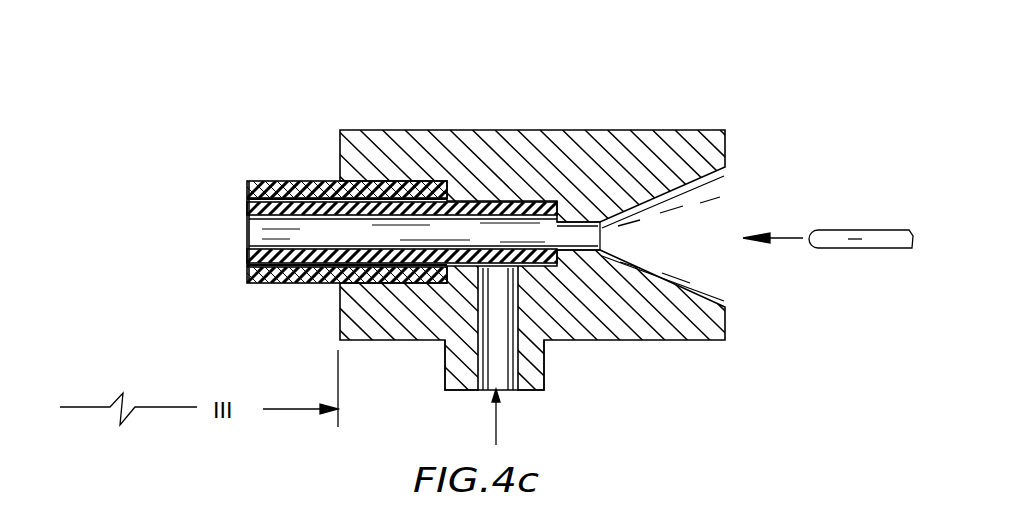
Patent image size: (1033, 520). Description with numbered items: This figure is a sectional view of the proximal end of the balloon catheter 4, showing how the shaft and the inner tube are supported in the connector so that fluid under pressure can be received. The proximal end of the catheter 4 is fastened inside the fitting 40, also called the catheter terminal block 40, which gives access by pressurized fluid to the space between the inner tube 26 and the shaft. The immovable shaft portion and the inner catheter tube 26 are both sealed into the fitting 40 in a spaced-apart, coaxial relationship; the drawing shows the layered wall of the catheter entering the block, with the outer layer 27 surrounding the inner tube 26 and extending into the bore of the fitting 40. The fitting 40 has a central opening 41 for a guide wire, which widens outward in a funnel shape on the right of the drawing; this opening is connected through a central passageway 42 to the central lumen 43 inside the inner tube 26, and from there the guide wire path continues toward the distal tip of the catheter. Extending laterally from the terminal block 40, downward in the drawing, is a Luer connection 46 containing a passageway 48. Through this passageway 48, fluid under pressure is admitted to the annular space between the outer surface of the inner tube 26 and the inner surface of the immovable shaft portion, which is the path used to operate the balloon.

The catheter 4 is at (291, 181).
The inner tube 26 is at (247, 208).
The outer jacket 27 is at (247, 196).
The fitting 40 is at (625, 130).
The central opening 41 is at (726, 184).
The central passageway 42 is at (588, 243).
The central lumen 43 is at (347, 242).
The Luer connection 46 is at (546, 355).
The passageway 48 is at (510, 391).